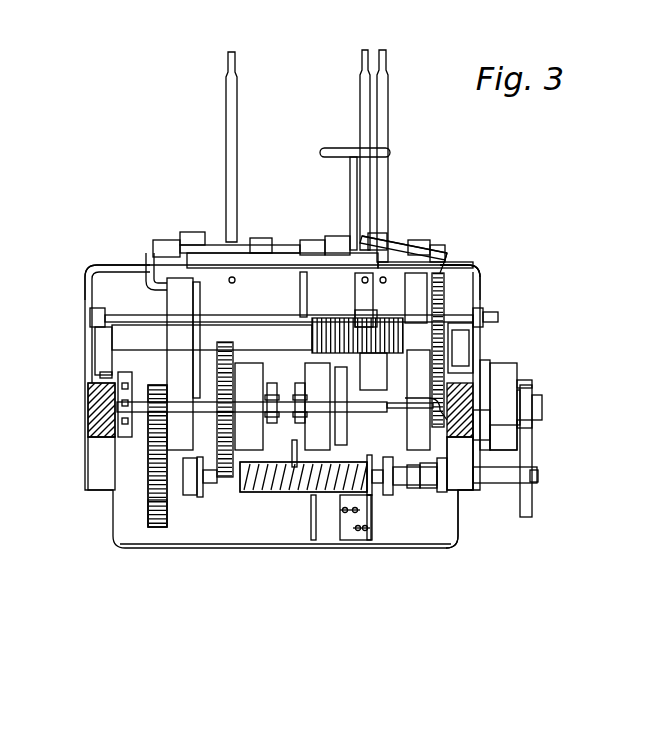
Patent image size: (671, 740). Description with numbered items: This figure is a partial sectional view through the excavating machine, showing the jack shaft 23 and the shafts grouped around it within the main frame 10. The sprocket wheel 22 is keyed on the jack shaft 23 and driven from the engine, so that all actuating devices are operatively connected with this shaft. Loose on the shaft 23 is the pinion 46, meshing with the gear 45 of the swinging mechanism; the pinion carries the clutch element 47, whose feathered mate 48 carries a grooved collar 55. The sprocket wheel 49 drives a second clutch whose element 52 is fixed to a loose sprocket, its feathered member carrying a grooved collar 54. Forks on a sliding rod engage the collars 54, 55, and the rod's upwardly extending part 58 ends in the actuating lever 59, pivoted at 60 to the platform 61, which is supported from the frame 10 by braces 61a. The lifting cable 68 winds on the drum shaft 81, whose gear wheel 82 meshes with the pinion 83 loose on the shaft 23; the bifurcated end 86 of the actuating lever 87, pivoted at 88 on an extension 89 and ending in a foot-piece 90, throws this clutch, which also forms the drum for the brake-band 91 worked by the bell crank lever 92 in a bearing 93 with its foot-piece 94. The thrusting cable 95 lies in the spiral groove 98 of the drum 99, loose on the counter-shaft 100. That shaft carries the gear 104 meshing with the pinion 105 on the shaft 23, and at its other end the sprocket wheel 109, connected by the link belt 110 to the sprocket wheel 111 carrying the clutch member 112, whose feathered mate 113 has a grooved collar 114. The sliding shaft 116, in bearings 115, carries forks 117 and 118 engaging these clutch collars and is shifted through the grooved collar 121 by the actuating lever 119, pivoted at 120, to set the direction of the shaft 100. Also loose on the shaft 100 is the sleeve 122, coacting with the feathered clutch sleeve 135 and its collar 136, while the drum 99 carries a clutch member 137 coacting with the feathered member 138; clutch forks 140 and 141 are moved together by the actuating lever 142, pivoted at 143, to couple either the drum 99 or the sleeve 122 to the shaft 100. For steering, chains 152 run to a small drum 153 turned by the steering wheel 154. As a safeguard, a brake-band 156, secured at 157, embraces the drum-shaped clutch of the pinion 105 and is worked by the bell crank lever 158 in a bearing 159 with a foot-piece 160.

The main frame 10 is at (100, 405).
The sprocket wheel 22 is at (98, 425).
The jack shaft 23 is at (542, 406).
The gear 45 is at (225, 460).
The pinion 46 is at (150, 507).
The clutch element 47 is at (233, 470).
The clutch element 48 is at (250, 438).
The sprocket wheel 49 is at (341, 430).
The clutch element 52 is at (370, 520).
The grooved collar 54 is at (276, 393).
The grooved collar 55 is at (300, 383).
The upwardly extending part 58 is at (517, 372).
The actuating lever 59 is at (389, 104).
The pivot 60 is at (386, 283).
The platform 61 is at (150, 258).
The braces 61a is at (88, 280).
The lifting cable 68 is at (300, 285).
The drum shaft 81 is at (212, 337).
The gear wheel 82 is at (455, 262).
The pinion 83 is at (478, 420).
The bifurcated end 86 is at (415, 415).
The actuating lever 87 is at (472, 272).
The pivot 88 is at (448, 256).
The extension 89 is at (438, 248).
The foot-piece 90 is at (385, 245).
The brake-band 91 is at (473, 480).
The bell crank lever 92 is at (378, 240).
The bearing 93 is at (313, 243).
The foot-piece 94 is at (337, 236).
The thrusting cable 95 is at (312, 528).
The spiral groove 98 is at (290, 492).
The drum 99 is at (266, 492).
The counter-shaft 100 is at (540, 475).
The gear 104 is at (145, 530).
The pinion 105 is at (122, 437).
The sprocket wheel 109 is at (535, 496).
The link belt 110 is at (535, 420).
The sprocket wheel 111 is at (542, 400).
The clutch member 112 is at (532, 393).
The clutch member 113 is at (490, 367).
The grooved collar 114 is at (525, 432).
The bearings 115 is at (93, 337).
The sliding shaft 116 is at (112, 316).
The fork 117 is at (175, 361).
The fork 118 is at (470, 346).
The actuating lever 119 is at (364, 116).
The pivot 120 is at (361, 280).
The grooved collar 121 is at (355, 315).
The sleeve 122 is at (400, 486).
The clutch sleeve 135 is at (428, 490).
The grooved collar 136 is at (458, 500).
The clutch member 137 is at (227, 477).
The clutch member 138 is at (167, 530).
The clutch fork 140 is at (442, 493).
The clutch fork 141 is at (190, 495).
The actuating lever 142 is at (228, 146).
The pivot 143 is at (236, 280).
The connecting chains 152 is at (345, 515).
The drum 153 is at (371, 500).
The steering wheel 154 is at (325, 150).
The brake-band 156 is at (153, 463).
The securing point 157 is at (95, 320).
The bell crank lever 158 is at (146, 283).
The bearing 159 is at (163, 242).
The foot-piece 160 is at (192, 234).